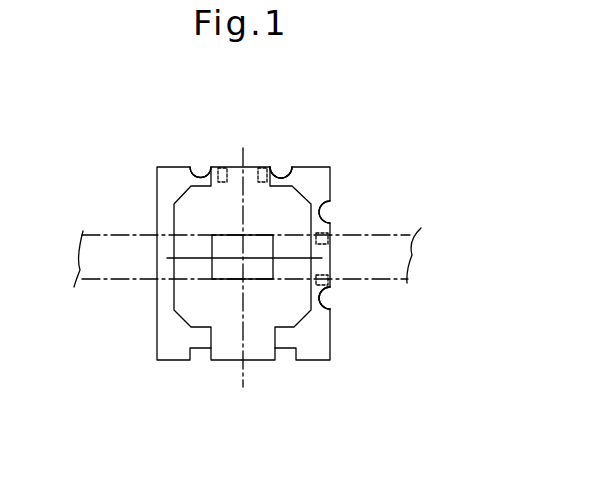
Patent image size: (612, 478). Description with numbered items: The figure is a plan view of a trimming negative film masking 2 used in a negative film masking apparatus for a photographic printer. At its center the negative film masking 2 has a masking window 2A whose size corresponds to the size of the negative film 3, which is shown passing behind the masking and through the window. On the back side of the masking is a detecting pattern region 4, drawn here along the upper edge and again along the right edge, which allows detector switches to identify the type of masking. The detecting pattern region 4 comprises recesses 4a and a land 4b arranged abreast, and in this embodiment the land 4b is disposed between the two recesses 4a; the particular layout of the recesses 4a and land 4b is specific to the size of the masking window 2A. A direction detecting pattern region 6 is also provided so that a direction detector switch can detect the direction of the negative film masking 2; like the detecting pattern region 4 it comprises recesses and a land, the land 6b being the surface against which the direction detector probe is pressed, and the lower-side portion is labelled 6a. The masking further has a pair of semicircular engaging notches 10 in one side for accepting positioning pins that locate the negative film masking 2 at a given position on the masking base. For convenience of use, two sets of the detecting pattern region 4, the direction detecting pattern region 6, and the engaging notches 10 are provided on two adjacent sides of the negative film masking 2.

The negative film masking 2 is at (334, 181).
The masking window 2A is at (255, 262).
The negative film 3 is at (113, 281).
The detecting pattern region 4 is at (303, 92).
The recesses 4a is at (223, 166).
The land 4b is at (245, 160).
The direction detecting pattern region 6 is at (367, 247).
The positioning recess (lower side) 6a is at (328, 290).
The land 6b is at (278, 166).
The engaging notches 10 is at (192, 167).